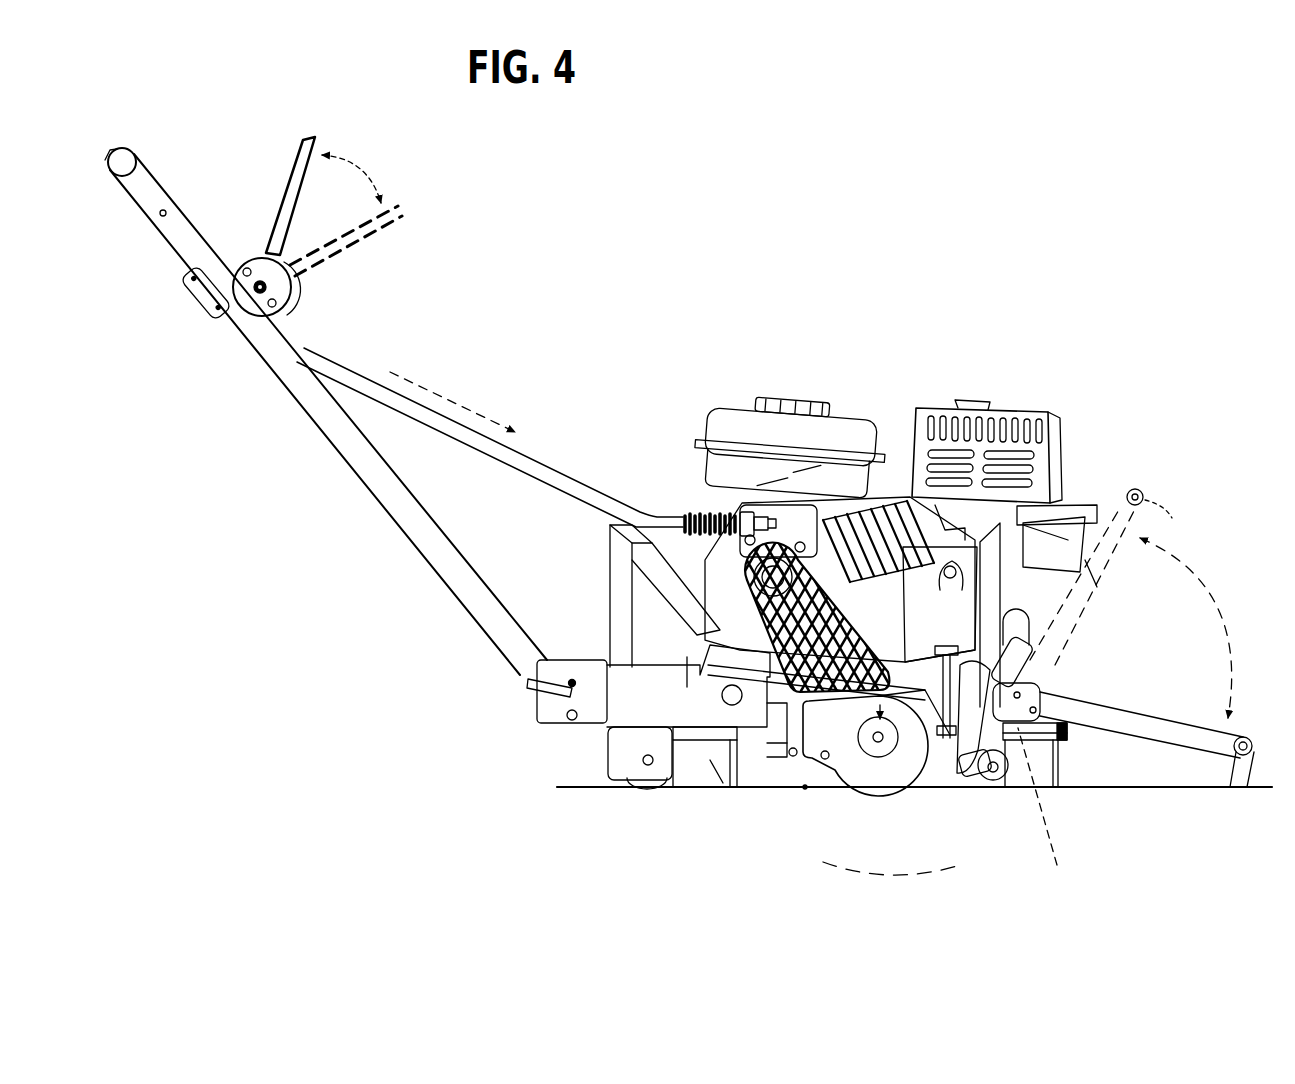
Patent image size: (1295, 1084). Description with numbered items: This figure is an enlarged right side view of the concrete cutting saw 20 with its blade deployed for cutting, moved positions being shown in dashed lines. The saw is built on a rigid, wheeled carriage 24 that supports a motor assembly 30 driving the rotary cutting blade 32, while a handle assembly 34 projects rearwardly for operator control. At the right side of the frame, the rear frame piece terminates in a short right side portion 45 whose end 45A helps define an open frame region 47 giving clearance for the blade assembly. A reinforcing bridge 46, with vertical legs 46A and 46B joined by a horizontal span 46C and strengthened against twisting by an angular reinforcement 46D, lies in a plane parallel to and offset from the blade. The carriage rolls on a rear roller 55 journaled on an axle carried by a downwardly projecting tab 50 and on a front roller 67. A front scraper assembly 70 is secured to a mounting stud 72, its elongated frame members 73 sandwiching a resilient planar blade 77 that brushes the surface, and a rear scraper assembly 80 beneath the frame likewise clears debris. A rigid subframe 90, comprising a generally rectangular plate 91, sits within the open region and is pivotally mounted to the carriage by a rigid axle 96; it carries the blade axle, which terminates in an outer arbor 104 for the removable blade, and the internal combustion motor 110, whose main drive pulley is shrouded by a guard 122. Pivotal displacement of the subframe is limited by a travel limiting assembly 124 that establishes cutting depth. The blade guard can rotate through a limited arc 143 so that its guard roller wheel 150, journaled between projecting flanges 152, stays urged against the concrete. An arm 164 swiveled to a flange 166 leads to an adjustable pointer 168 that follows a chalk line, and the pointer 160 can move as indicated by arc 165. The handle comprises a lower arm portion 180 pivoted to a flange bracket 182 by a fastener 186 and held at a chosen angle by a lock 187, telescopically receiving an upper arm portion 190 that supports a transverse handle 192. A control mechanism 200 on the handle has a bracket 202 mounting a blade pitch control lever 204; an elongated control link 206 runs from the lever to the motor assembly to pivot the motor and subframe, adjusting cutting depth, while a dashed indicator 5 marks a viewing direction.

The fuel tank 5 is at (790, 431).
The concrete cutting saw 20 is at (726, 291).
The wheeled carriage 24 is at (612, 782).
The motor assembly 30 is at (899, 496).
The rotary cutting blade 32 is at (869, 768).
The handle assembly 34 is at (387, 680).
The right side portion 45 is at (701, 774).
The frame portion end 45A is at (758, 796).
The reinforcing bridge 46 is at (745, 615).
The bridge leg 46A is at (1071, 506).
The bridge leg 46B is at (598, 596).
The horizontal span 46C is at (708, 463).
The angular reinforcement 46D is at (632, 589).
The open frame region 47 is at (873, 843).
The rigid tab 50 is at (624, 810).
The rear roller 55 is at (647, 813).
The front roller 67 is at (962, 763).
The front scraper assembly 70 is at (1071, 685).
The mounting stud 72 is at (1038, 739).
The elongated frame members 73 is at (1063, 740).
The resilient planar blade 77 is at (1070, 765).
The rear scraper assembly 80 is at (914, 831).
The subframe 90 is at (816, 744).
The rectangular plate 91 is at (905, 679).
The axle 96 is at (697, 701).
The outer arbor 104 is at (866, 780).
The internal combustion motor 110 is at (987, 417).
The guard 122 is at (761, 617).
The travel limiting assembly 124 is at (1014, 526).
The limited arc 143 is at (1049, 813).
The guard roller wheel 150 is at (1008, 798).
The projecting flanges 152 is at (984, 815).
The pointer 160 is at (1211, 602).
The arm 164 is at (1136, 644).
The arc 165 is at (1201, 617).
The flange 166 is at (1059, 649).
The adjustable pointer 168 is at (1228, 791).
The lower arm portion 180 is at (315, 422).
The flange bracket 182 is at (528, 717).
The fastener 186 is at (557, 745).
The lock 187 is at (504, 697).
The upper arm portion 190 is at (333, 407).
The transverse handle 192 is at (162, 151).
The control mechanism 200 is at (332, 293).
The bracket 202 is at (338, 272).
The blade pitch control lever 204 is at (334, 176).
The control link 206 is at (490, 437).